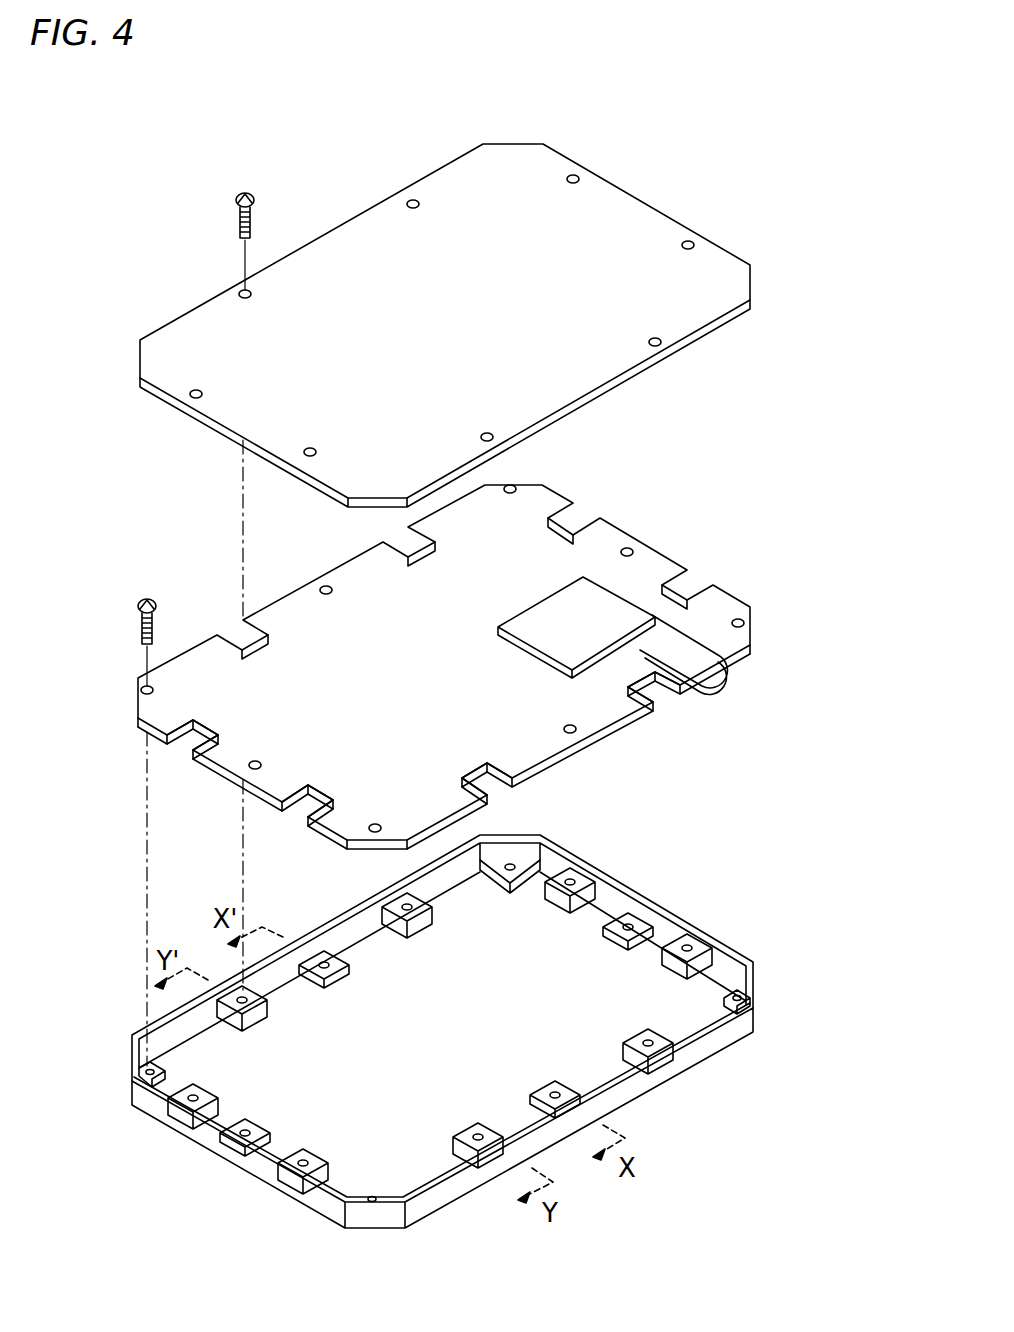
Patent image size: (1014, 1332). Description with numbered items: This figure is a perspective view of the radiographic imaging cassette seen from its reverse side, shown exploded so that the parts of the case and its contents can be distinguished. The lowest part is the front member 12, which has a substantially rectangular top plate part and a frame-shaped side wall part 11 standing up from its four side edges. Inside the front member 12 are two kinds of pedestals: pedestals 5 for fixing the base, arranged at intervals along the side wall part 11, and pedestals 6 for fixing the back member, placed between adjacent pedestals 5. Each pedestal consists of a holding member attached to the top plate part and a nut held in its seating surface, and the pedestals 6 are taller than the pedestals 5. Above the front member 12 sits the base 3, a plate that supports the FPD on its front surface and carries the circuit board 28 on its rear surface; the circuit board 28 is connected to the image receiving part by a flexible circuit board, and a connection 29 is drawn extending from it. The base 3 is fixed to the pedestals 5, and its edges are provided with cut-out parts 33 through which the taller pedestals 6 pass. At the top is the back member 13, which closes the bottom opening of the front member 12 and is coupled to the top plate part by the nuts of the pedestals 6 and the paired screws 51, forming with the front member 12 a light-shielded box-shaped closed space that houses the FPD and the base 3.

The base 3 is at (608, 540).
The pedestal for fixing the base 5 is at (637, 920).
The pedestal for fixing the back member 6 is at (584, 873).
The side wall part 11 is at (648, 1078).
The front member 12 is at (748, 950).
The back member 13 is at (657, 205).
The circuit board 28 is at (613, 610).
The connection terminal 29 is at (713, 683).
The cut-out part 33 is at (663, 690).
The screw 51 is at (243, 192).